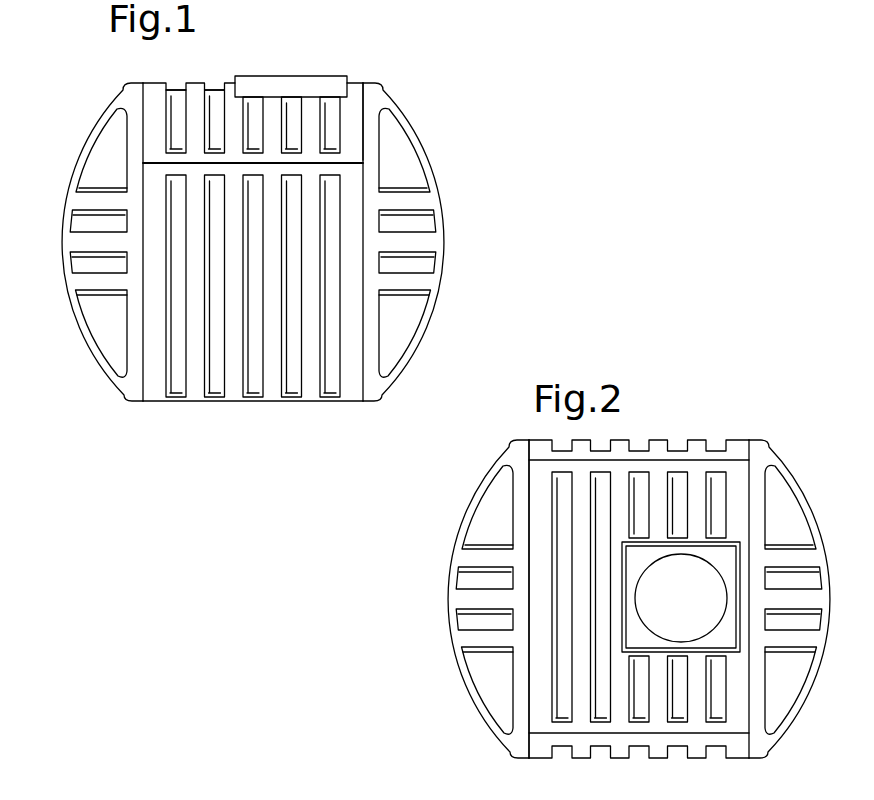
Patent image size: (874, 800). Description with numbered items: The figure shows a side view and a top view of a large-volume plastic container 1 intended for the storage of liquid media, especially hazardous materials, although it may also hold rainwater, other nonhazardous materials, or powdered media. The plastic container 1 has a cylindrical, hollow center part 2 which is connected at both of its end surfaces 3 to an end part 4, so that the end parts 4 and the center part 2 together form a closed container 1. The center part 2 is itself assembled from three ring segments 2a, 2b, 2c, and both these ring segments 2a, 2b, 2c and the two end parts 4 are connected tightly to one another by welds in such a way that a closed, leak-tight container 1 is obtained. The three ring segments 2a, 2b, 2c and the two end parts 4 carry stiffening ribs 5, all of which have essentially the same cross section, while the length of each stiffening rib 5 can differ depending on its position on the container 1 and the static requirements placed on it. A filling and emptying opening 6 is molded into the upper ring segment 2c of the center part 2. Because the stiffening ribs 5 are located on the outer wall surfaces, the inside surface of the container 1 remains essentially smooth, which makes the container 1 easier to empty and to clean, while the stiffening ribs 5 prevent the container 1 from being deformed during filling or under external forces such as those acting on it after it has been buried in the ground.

In FIG. 1, the plastic container 1 is at (307, 240).
In FIG. 1, the center part 2 is at (284, 240).
In FIG. 1, the ring segment 2a is at (355, 387).
In FIG. 2, the ring segment 2b is at (698, 450).
In FIG. 1, the upper ring segment 2c is at (352, 95).
In FIG. 2, the upper ring segment 2c is at (540, 538).
In FIG. 1, the end surface 3 is at (363, 152).
In FIG. 1, the end part 4 is at (125, 107).
In FIG. 1, the stiffening rib 5 is at (197, 88).
In FIG. 1, the filling and emptying opening 6 is at (283, 90).
In FIG. 2, the filling and emptying opening 6 is at (722, 555).